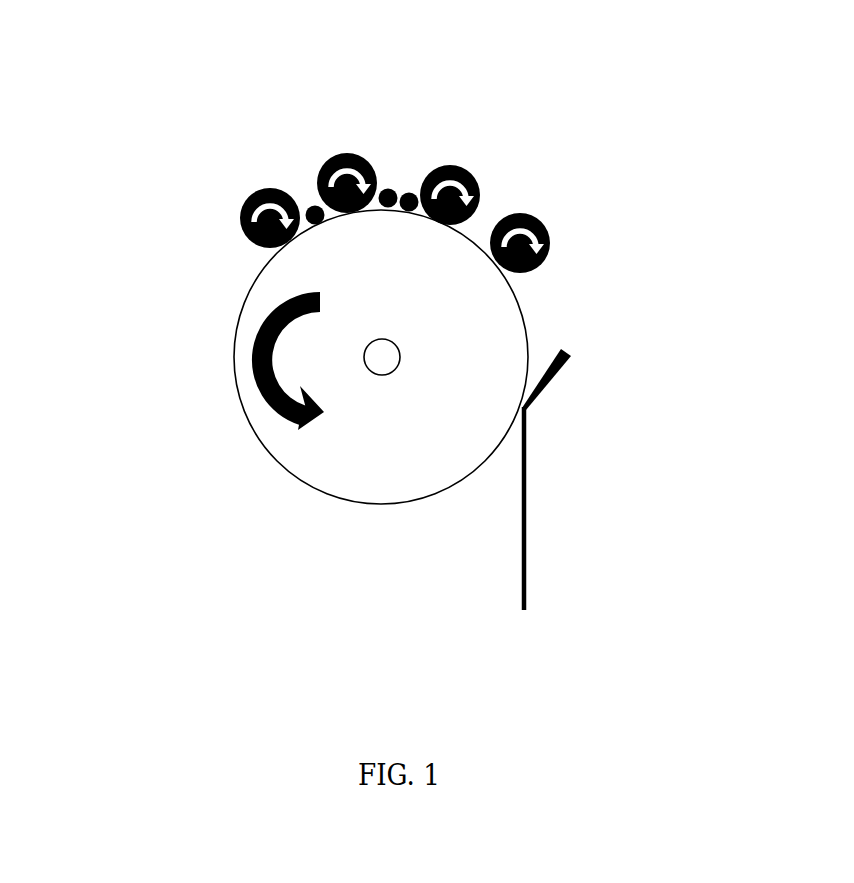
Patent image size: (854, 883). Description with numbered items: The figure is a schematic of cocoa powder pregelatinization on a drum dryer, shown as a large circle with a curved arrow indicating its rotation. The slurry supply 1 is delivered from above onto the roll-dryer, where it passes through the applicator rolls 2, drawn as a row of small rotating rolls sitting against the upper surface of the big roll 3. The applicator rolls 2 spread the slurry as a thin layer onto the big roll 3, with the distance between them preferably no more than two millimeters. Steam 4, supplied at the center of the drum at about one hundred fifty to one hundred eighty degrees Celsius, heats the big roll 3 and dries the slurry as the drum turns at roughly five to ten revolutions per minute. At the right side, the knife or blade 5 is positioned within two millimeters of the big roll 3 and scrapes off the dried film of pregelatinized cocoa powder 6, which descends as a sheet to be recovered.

The slurry supply 1 is at (395, 162).
The applicator rolls 2 is at (212, 222).
The big roll 3 is at (343, 481).
The steam 4 is at (383, 373).
The knife or blade 5 is at (581, 375).
The dried film of pregelatinized cocoa powder 6 is at (543, 517).